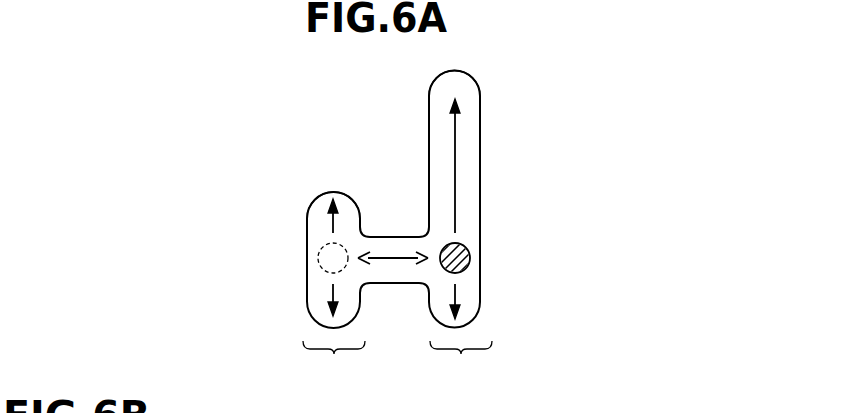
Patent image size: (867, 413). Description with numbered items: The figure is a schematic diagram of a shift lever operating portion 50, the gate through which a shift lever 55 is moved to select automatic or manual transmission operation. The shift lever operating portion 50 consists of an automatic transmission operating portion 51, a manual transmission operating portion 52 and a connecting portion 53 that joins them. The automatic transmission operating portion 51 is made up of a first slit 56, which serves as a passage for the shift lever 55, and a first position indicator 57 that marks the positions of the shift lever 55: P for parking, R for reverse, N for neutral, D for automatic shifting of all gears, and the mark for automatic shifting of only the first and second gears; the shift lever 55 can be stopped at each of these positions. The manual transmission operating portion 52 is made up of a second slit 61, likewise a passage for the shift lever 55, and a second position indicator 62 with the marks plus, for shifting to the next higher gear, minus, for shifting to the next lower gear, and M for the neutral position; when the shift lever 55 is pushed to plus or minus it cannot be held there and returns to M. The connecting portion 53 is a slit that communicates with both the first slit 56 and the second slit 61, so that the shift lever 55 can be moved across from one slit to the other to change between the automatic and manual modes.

The shift lever operating portion 50 is at (310, 115).
The automatic transmission operating portion 51 is at (535, 123).
The manual transmission operating portion 52 is at (248, 223).
The connecting portion 53 is at (395, 236).
The shift lever 55 is at (467, 251).
The first slit 56 is at (429, 132).
The first position indicator 57 is at (510, 68).
The second slit 61 is at (348, 200).
The second position indicator 62 is at (277, 176).